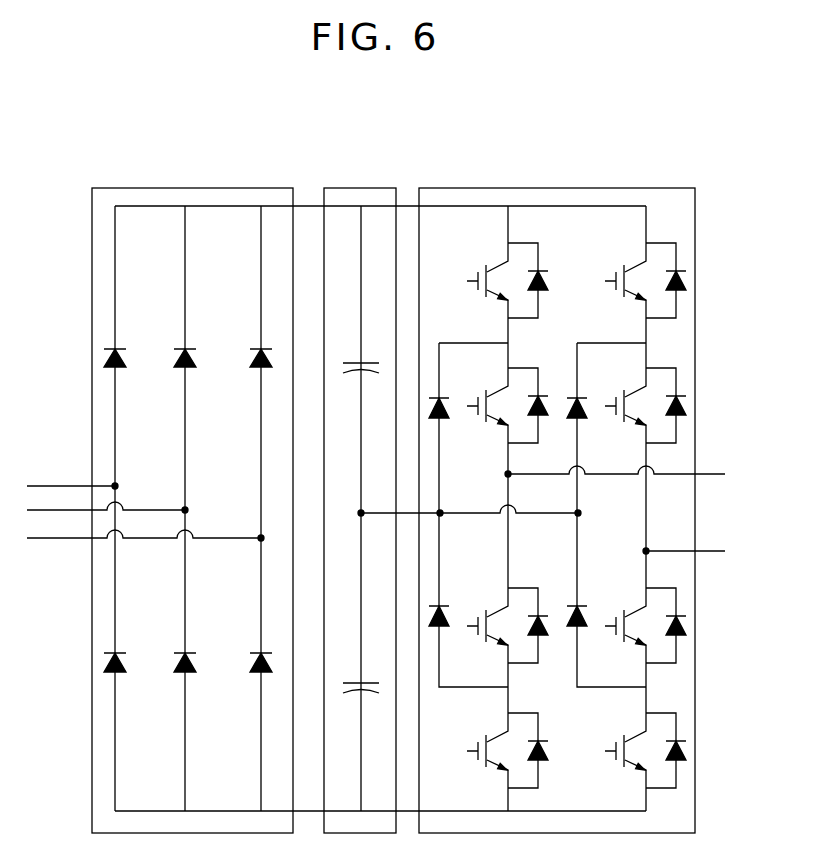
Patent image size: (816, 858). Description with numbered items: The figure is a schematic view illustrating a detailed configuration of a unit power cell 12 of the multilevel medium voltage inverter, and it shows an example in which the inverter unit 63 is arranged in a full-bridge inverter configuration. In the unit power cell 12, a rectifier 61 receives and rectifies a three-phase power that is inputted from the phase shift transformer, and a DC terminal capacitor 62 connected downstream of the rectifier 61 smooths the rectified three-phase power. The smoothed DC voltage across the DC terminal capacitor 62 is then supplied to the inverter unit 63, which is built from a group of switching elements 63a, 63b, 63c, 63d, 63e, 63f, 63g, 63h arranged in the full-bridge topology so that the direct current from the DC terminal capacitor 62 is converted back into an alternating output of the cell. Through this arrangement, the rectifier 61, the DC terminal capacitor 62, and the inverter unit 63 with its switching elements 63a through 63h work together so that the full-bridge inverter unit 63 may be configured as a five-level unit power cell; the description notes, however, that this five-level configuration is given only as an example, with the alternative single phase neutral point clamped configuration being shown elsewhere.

The unit power cell 12 is at (596, 123).
The rectifier 61 is at (272, 188).
The DC terminal capacitor 62 is at (369, 188).
The inverter unit 63 is at (656, 188).
The switching element 63a is at (504, 263).
The switching element 63b is at (504, 388).
The switching element 63c is at (504, 608).
The switching element 63d is at (504, 733).
The switching element 63e is at (642, 263).
The switching element 63f is at (642, 388).
The switching element 63g is at (642, 608).
The switching element 63h is at (642, 733).